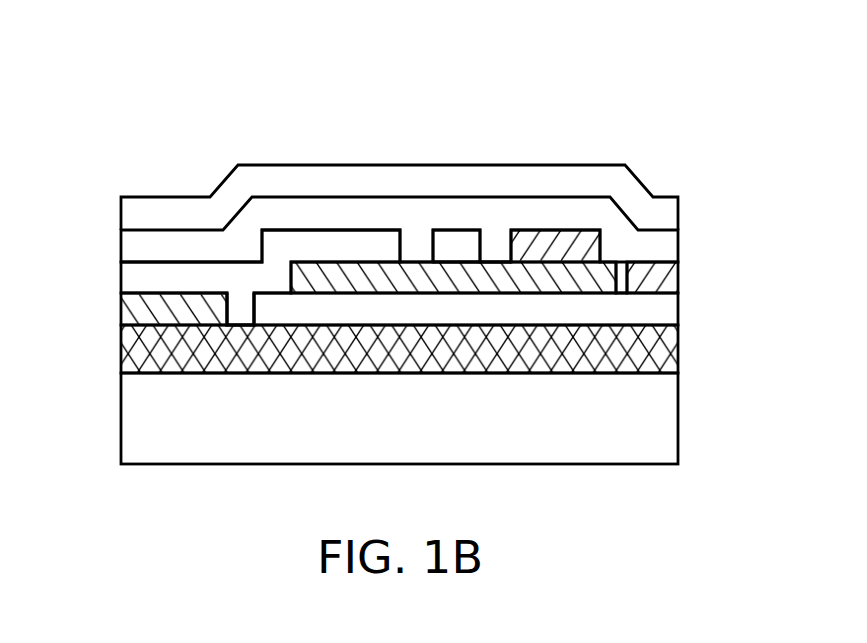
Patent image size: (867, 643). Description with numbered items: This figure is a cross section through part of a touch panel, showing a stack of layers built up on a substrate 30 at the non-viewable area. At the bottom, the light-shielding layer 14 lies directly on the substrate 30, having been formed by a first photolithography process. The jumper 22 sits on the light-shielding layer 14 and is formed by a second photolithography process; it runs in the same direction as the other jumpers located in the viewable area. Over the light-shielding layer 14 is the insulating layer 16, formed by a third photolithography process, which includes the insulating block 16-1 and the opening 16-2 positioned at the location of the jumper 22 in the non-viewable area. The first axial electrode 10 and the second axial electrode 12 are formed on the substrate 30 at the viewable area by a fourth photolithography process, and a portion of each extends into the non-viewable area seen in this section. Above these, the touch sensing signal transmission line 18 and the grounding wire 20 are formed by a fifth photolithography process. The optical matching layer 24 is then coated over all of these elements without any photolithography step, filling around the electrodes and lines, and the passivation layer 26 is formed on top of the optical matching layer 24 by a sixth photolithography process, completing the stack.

The first axial electrode 10 is at (128, 278).
The second axial electrode 12 is at (455, 247).
The light-shielding layer 14 is at (670, 348).
The insulating layer 16 is at (118, 310).
The insulating block 16-1 is at (477, 282).
The opening 16-2 is at (240, 315).
The touch sensing signal transmission line 18 is at (672, 277).
The grounding wire 20 is at (555, 248).
The jumper 22 is at (668, 308).
The optical matching layer 24 is at (670, 243).
The passivation layer 26 is at (668, 213).
The substrate 30 is at (668, 418).